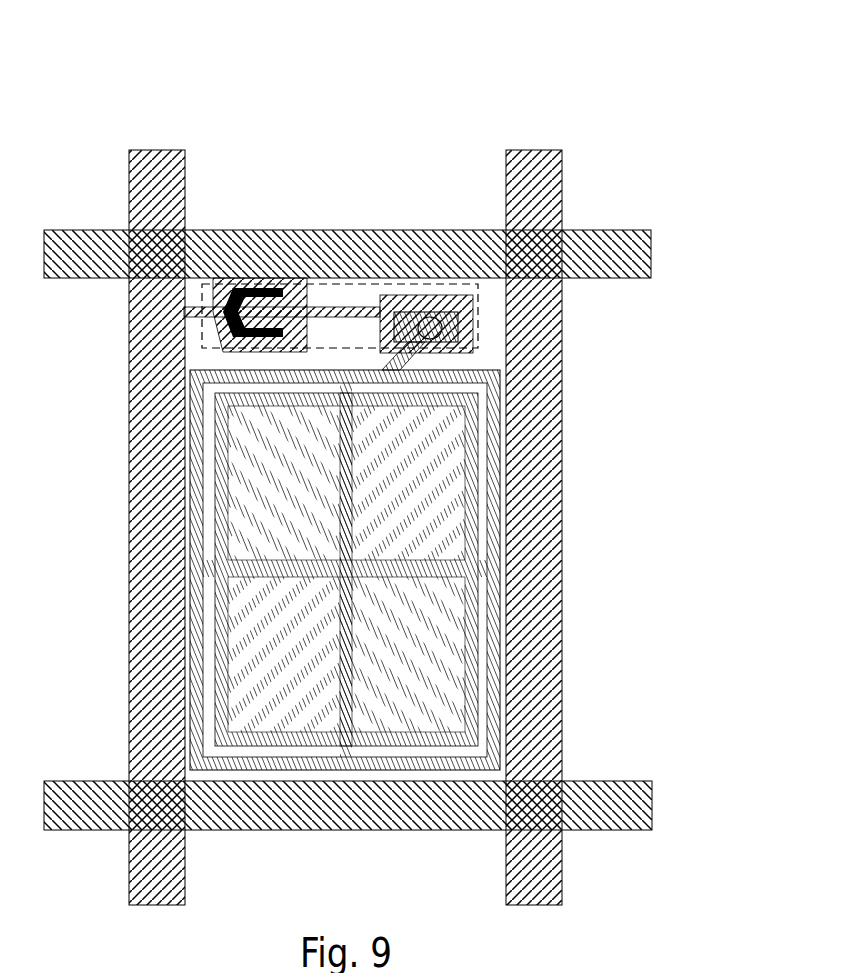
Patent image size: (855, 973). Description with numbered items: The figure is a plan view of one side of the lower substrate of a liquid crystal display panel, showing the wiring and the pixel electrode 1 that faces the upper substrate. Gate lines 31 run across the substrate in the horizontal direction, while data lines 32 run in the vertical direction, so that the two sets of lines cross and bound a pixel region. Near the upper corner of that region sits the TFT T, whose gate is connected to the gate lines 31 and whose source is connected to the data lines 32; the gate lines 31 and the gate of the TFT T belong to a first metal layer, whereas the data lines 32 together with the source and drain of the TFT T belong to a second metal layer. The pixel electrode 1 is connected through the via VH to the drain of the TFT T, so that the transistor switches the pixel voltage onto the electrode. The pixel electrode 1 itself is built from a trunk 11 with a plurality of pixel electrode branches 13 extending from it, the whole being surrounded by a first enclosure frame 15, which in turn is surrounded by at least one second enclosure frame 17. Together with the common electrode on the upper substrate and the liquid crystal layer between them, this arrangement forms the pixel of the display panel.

The pixel electrode 1 is at (459, 562).
The trunk 11 is at (447, 563).
The pixel electrode branches 13 is at (437, 620).
The first enclosure frame 15 is at (413, 403).
The second enclosure frame 17 is at (422, 763).
The gate lines 31 is at (618, 257).
The data lines 32 is at (155, 165).
The TFT T is at (478, 306).
The via VH is at (432, 330).